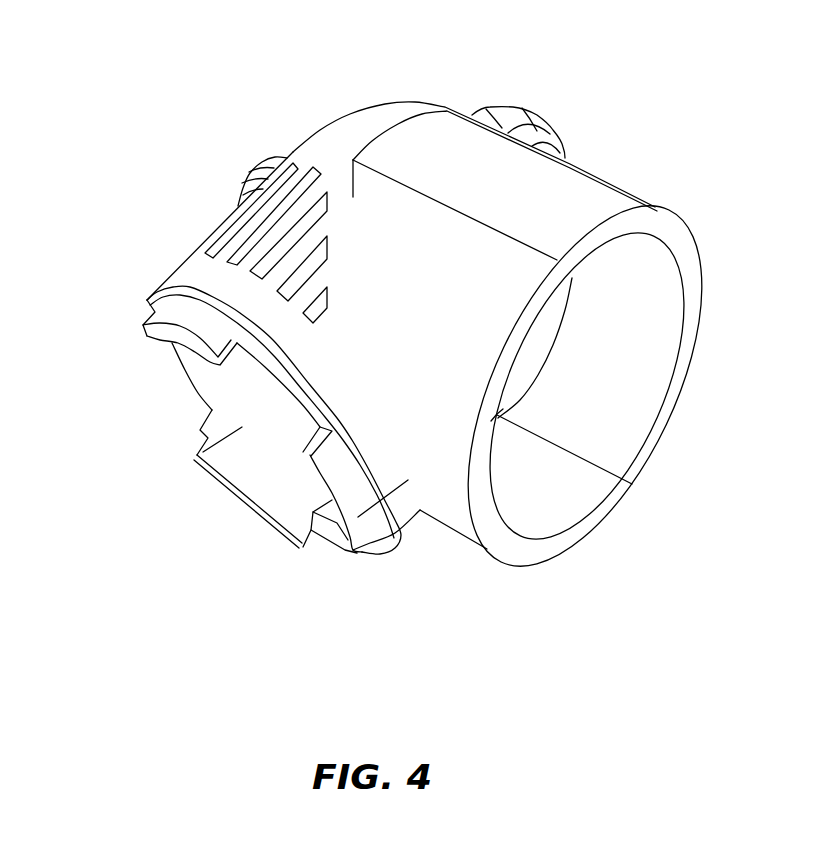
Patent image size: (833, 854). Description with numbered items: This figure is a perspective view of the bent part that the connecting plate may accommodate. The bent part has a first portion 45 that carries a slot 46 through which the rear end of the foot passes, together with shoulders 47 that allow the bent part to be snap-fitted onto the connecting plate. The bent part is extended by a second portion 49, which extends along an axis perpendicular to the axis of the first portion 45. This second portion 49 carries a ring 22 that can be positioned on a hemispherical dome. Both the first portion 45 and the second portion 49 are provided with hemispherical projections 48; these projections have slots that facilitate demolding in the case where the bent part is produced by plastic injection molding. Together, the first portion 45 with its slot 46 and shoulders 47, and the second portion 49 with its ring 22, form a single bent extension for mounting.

The ring 22 is at (677, 290).
The first portion 45 is at (188, 278).
The slot 46 is at (191, 381).
The shoulders 47 is at (247, 507).
The hemispherical projections 48 is at (245, 188).
The second portion 49 is at (540, 198).